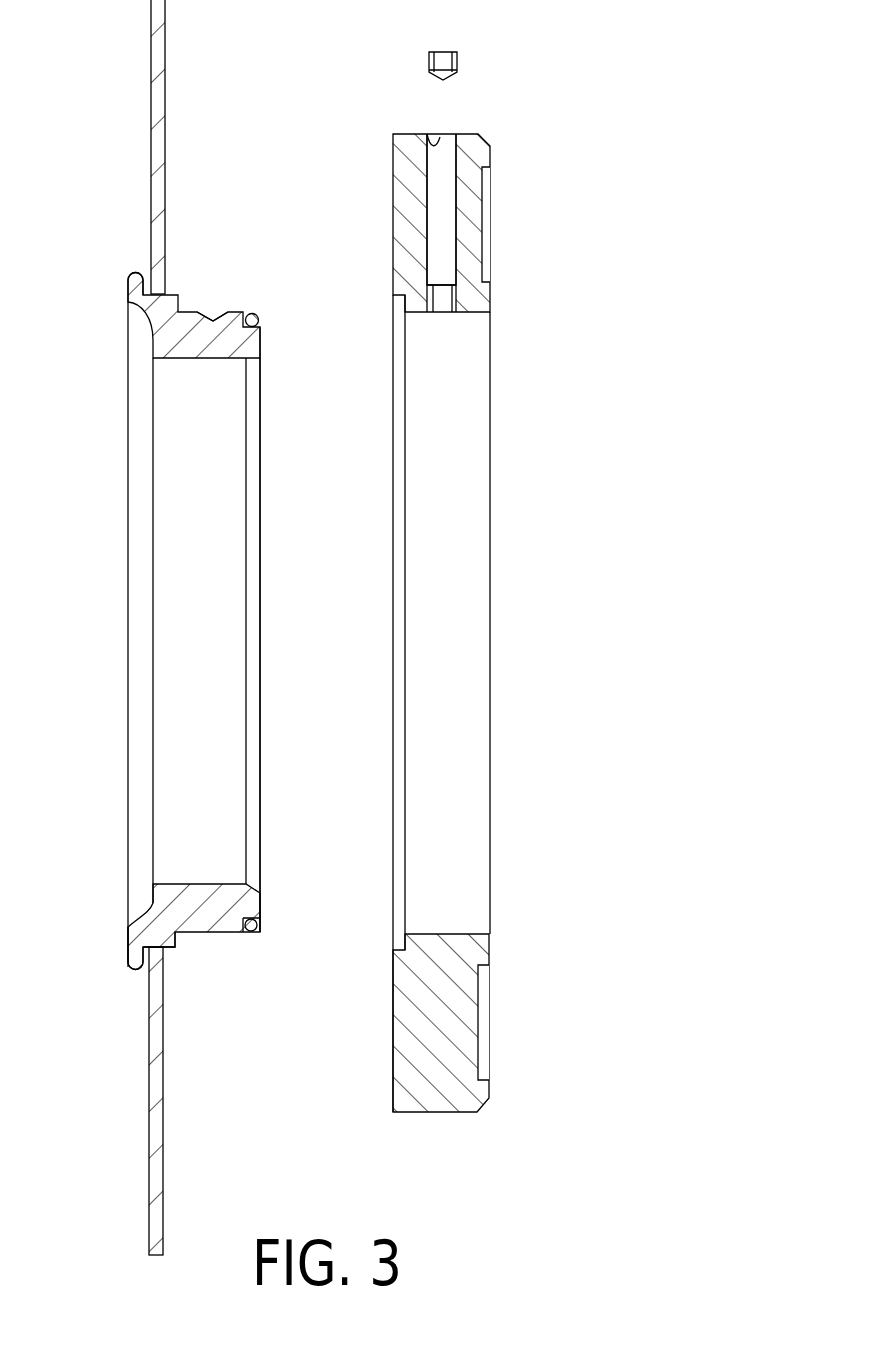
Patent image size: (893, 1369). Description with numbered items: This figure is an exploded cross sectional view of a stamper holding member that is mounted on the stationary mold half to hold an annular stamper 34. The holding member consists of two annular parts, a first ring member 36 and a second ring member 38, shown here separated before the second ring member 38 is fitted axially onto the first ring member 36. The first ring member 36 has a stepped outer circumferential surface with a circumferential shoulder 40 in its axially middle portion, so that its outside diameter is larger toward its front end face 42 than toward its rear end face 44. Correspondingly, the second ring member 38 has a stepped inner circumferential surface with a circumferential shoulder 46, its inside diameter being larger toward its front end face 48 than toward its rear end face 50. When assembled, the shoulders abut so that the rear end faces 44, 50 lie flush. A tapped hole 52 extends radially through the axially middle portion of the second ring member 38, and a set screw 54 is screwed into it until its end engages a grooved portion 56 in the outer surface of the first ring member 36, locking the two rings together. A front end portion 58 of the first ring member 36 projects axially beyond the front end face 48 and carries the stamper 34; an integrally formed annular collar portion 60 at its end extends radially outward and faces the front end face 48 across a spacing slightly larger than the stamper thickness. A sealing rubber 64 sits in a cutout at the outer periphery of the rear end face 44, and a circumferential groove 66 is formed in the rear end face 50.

The annular stamper 34 is at (152, 1098).
The first ring member 36 is at (206, 918).
The second ring member 38 is at (412, 1053).
The circumferential shoulder 40 is at (175, 937).
The front end face 42 is at (152, 346).
The rear end face 44 is at (262, 331).
The circumferential shoulder 46 is at (395, 936).
The front end face 48 is at (393, 188).
The rear end face 50 is at (489, 950).
The tapped hole 52 is at (440, 137).
The set screw 54 is at (445, 52).
The grooved portion 56 is at (217, 321).
The front end portion 58 is at (153, 303).
The annular collar portion 60 is at (140, 968).
The sealing rubber 64 is at (259, 320).
The circumferential groove 66 is at (487, 200).